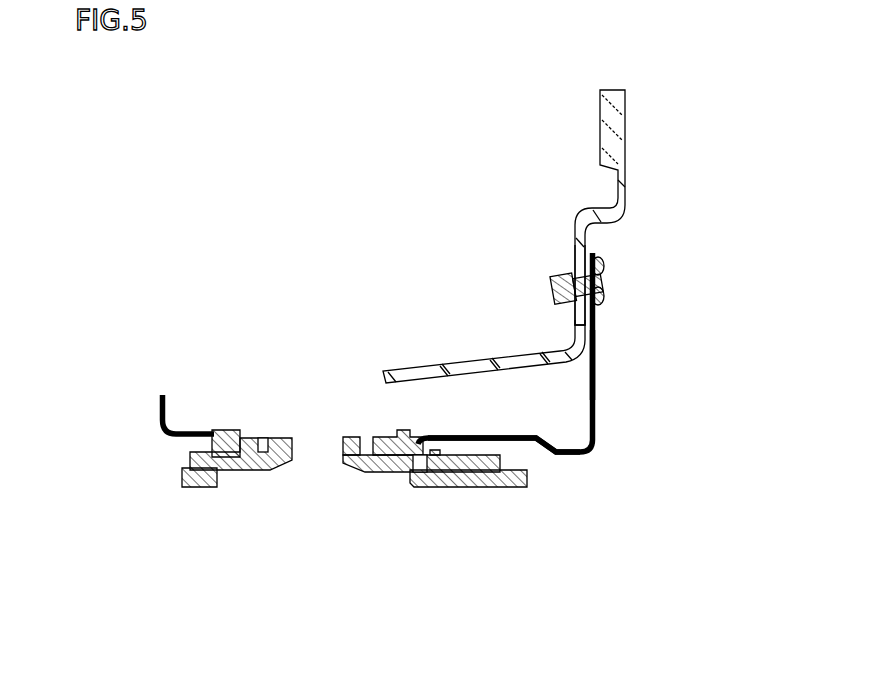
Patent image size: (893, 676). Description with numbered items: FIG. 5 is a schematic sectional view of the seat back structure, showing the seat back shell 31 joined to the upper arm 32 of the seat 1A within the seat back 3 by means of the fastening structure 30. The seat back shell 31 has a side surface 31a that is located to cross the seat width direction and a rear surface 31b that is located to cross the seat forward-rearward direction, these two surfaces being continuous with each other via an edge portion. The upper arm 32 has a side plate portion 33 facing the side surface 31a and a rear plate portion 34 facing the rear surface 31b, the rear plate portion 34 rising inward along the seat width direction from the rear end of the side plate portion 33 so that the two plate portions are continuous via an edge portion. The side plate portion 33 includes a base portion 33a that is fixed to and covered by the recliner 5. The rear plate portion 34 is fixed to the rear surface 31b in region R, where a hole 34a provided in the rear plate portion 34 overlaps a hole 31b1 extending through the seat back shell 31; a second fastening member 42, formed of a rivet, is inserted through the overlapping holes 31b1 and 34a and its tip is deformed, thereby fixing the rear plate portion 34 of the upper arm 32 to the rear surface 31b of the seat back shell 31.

The battery pack 1A is at (752, 54).
The bus bar module 3 is at (166, 108).
The cover 30 is at (564, 324).
The seat back shell 31 is at (625, 128).
The side surface 31a is at (463, 373).
The rear surface 31b is at (592, 243).
The hole 31b1 is at (567, 272).
The upper arm 32 is at (558, 406).
The side plate portion 33 is at (562, 456).
The base portion 33a is at (207, 440).
The rear plate portion 34 is at (594, 407).
The hole 34a is at (598, 290).
The second fastening member 42 is at (590, 282).
The recliner 5 is at (200, 487).
The region R is at (594, 365).